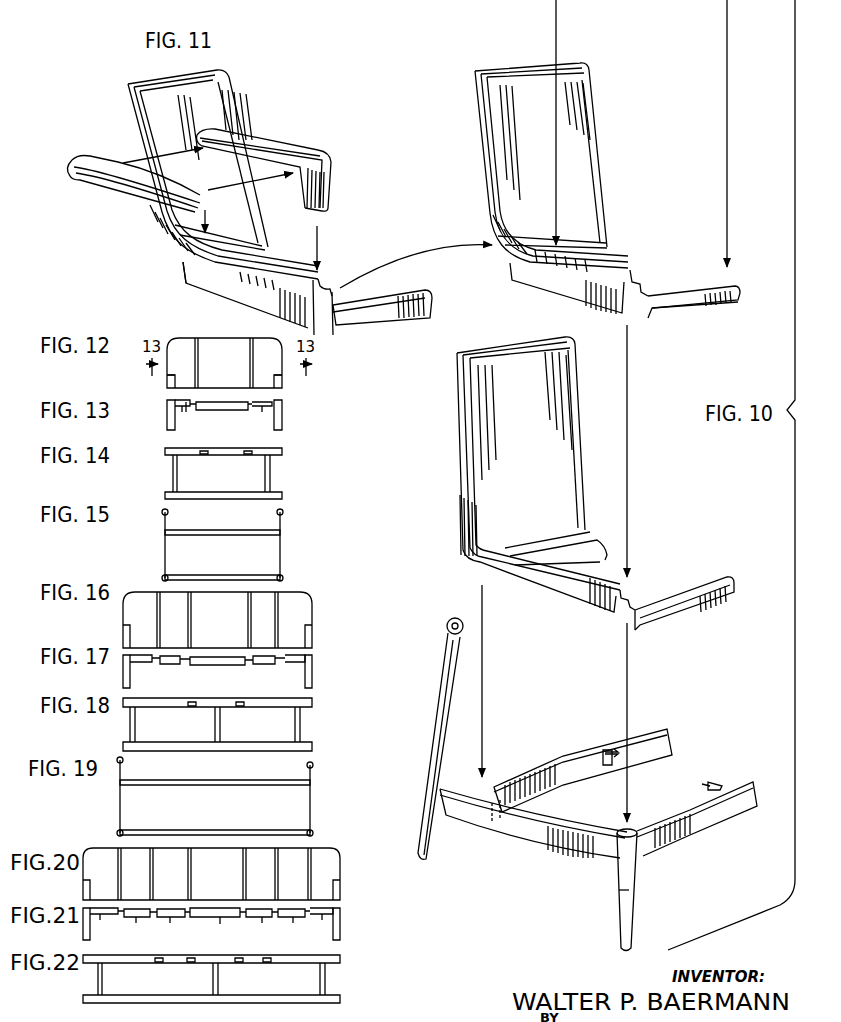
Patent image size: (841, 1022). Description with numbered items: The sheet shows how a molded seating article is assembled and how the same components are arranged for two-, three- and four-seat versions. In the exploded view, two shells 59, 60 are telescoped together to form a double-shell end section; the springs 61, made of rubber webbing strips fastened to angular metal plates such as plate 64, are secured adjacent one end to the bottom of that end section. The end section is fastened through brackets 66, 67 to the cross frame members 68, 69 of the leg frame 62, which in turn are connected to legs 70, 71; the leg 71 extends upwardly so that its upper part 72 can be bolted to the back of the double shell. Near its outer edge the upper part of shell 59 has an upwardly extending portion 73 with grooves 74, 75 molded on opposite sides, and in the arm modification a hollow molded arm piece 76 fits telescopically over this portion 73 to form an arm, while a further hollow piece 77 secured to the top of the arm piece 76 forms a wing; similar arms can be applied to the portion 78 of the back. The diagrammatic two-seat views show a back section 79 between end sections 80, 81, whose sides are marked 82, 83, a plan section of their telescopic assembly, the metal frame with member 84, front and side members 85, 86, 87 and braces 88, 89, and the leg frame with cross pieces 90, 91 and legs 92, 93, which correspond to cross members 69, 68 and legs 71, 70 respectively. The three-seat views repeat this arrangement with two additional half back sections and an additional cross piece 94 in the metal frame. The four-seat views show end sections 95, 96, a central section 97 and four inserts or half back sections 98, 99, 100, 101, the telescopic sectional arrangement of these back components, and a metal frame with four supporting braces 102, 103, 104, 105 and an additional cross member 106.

In FIG. 10, the shell 59 is at (592, 170).
In FIG. 10, the shell 60 is at (575, 436).
In FIG. 10, the springs 61 is at (582, 0).
In FIG. 10, the leg frame 62 is at (540, 861).
In FIG. 10, the angular metal plate 64 is at (667, 8).
In FIG. 10, the bracket 66 is at (720, 785).
In FIG. 10, the bracket 67 is at (609, 750).
In FIG. 10, the cross frame member 68 is at (695, 826).
In FIG. 10, the cross frame member 69 is at (578, 777).
In FIG. 10, the leg 70 is at (640, 880).
In FIG. 10, the leg 71 is at (420, 814).
In FIG. 10, the upper part of leg 72 is at (446, 626).
In FIG. 11, the upwardly extending portion 73 is at (318, 278).
In FIG. 10, the upwardly extending portion 73 is at (632, 272).
In FIG. 11, the groove 74 is at (324, 286).
In FIG. 10, the groove 74 is at (640, 283).
In FIG. 11, the groove 75 is at (290, 283).
In FIG. 10, the groove 75 is at (590, 278).
In FIG. 11, the hollow molded arm piece 76 is at (325, 178).
In FIG. 11, the wing piece 77 is at (118, 196).
In FIG. 11, the portion of back structure 78 is at (152, 135).
In FIG. 12, the back section 79 is at (234, 368).
In FIG. 13, the back section 79 is at (228, 410).
In FIG. 12, the end section 80 is at (272, 368).
In FIG. 13, the end section 80 is at (262, 412).
In FIG. 12, the end section 81 is at (187, 368).
In FIG. 13, the end section 81 is at (186, 417).
In FIG. 12, the side of end section 82 is at (282, 380).
In FIG. 13, the side of end section 82 is at (282, 426).
In FIG. 12, the side of end section 83 is at (167, 380).
In FIG. 13, the side of end section 83 is at (167, 426).
In FIG. 14, the frame member 84 is at (223, 463).
In FIG. 14, the front frame member 85 is at (232, 496).
In FIG. 14, the side frame member 86 is at (178, 485).
In FIG. 14, the side frame member 87 is at (266, 478).
In FIG. 14, the brace 88 is at (200, 450).
In FIG. 14, the brace 89 is at (246, 450).
In FIG. 15, the cross piece 90 is at (208, 531).
In FIG. 15, the cross piece 91 is at (206, 576).
In FIG. 15, the leg 92 is at (162, 578).
In FIG. 15, the leg 93 is at (162, 514).
In FIG. 18, the cross piece 94 is at (222, 726).
In FIG. 20, the end section 95 is at (332, 879).
In FIG. 21, the end section 95 is at (319, 924).
In FIG. 20, the end section 96 is at (112, 879).
In FIG. 21, the end section 96 is at (104, 926).
In FIG. 20, the central section 97 is at (226, 879).
In FIG. 21, the central section 97 is at (212, 926).
In FIG. 20, the half back section 98 is at (180, 879).
In FIG. 21, the half back section 98 is at (167, 927).
In FIG. 20, the half back section 99 is at (269, 879).
In FIG. 21, the half back section 99 is at (256, 925).
In FIG. 20, the half back section 100 is at (302, 881).
In FIG. 21, the half back section 100 is at (290, 928).
In FIG. 20, the half back section 101 is at (147, 879).
In FIG. 21, the half back section 101 is at (134, 926).
In FIG. 22, the supporting brace 102 is at (158, 963).
In FIG. 22, the supporting brace 103 is at (191, 963).
In FIG. 22, the supporting brace 104 is at (238, 963).
In FIG. 22, the supporting brace 105 is at (266, 963).
In FIG. 22, the cross member 106 is at (220, 978).